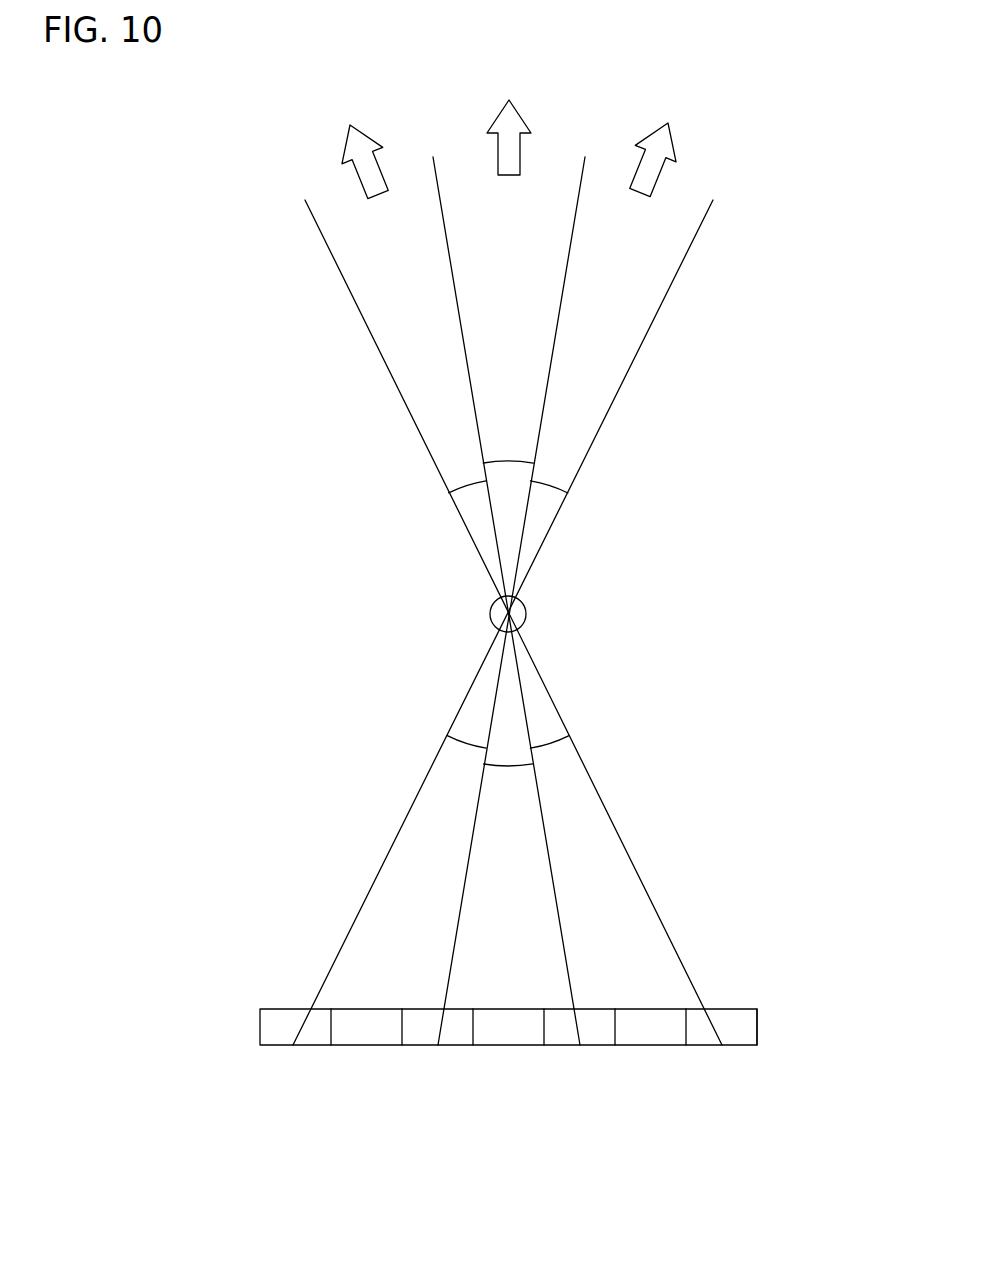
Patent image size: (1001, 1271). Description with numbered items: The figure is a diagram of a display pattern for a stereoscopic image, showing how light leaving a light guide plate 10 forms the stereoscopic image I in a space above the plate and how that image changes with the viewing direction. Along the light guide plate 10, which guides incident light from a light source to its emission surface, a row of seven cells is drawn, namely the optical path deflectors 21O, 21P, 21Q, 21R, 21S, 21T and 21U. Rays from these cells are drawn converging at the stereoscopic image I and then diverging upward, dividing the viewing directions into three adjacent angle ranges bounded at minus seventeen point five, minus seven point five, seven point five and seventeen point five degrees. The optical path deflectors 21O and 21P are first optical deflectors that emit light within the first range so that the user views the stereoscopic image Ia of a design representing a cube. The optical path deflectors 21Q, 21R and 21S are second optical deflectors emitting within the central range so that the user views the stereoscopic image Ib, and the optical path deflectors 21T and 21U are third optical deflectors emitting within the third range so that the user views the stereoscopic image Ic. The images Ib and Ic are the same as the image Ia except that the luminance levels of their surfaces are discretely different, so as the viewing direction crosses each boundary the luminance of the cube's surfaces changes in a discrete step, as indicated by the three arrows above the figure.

The light guide plate 10 is at (739, 985).
The optical path deflector 21U is at (280, 1035).
The optical path deflector 21T is at (368, 1035).
The optical path deflector 21S is at (422, 1035).
The optical path deflector 21R is at (508, 1035).
The optical path deflector 21Q is at (597, 1035).
The optical path deflector 21P is at (652, 1035).
The optical path deflector 21O is at (738, 1035).
The stereoscopic image I is at (526, 613).
The stereoscopic image of design A Ia is at (383, 147).
The stereoscopic image of design B Ib is at (515, 108).
The stereoscopic image of design C Ic is at (672, 138).